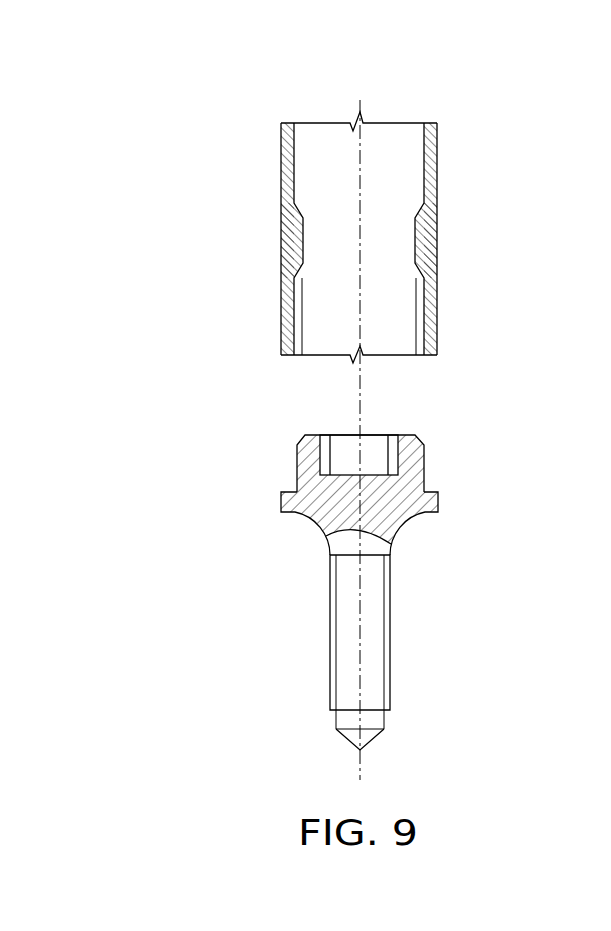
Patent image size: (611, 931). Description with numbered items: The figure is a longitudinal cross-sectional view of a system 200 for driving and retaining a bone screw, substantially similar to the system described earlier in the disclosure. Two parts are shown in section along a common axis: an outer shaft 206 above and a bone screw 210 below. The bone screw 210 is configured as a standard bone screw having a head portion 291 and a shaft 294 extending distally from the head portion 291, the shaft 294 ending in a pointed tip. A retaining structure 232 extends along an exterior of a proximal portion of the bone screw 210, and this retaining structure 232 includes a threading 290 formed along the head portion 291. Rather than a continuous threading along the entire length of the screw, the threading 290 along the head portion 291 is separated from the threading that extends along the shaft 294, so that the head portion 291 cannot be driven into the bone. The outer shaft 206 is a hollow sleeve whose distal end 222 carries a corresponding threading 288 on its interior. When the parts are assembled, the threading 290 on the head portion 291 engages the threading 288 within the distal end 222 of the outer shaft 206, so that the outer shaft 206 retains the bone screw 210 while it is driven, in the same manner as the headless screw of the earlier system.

The system 200 is at (188, 118).
The outer shaft 206 is at (494, 210).
The distal end 222 is at (437, 308).
The threading 288 is at (298, 309).
The bone screw 210 is at (476, 626).
The threading 290 is at (297, 463).
The head portion 291 is at (413, 465).
The retaining structure 232 is at (297, 480).
The shaft 294 is at (335, 612).